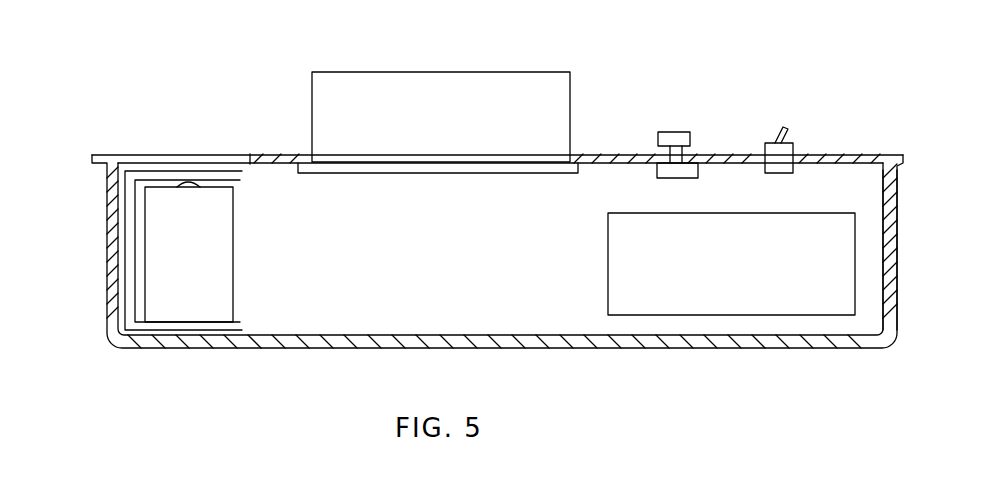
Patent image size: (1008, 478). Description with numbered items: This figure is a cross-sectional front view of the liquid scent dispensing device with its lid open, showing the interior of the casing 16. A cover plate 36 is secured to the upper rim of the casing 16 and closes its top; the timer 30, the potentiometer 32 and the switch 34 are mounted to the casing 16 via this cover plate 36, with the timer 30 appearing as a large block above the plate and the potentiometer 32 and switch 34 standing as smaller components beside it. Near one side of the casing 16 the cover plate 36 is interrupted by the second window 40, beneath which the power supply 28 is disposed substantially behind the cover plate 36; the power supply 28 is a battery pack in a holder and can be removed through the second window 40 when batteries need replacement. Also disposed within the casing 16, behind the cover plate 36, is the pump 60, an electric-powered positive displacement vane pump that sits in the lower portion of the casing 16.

The casing 16 is at (97, 153).
The power supply 28 is at (240, 320).
The timer 30 is at (462, 70).
The potentiometer 32 is at (677, 128).
The switch 34 is at (767, 142).
The cover plate 36 is at (838, 152).
The second window 40 is at (236, 153).
The pump 60 is at (608, 262).